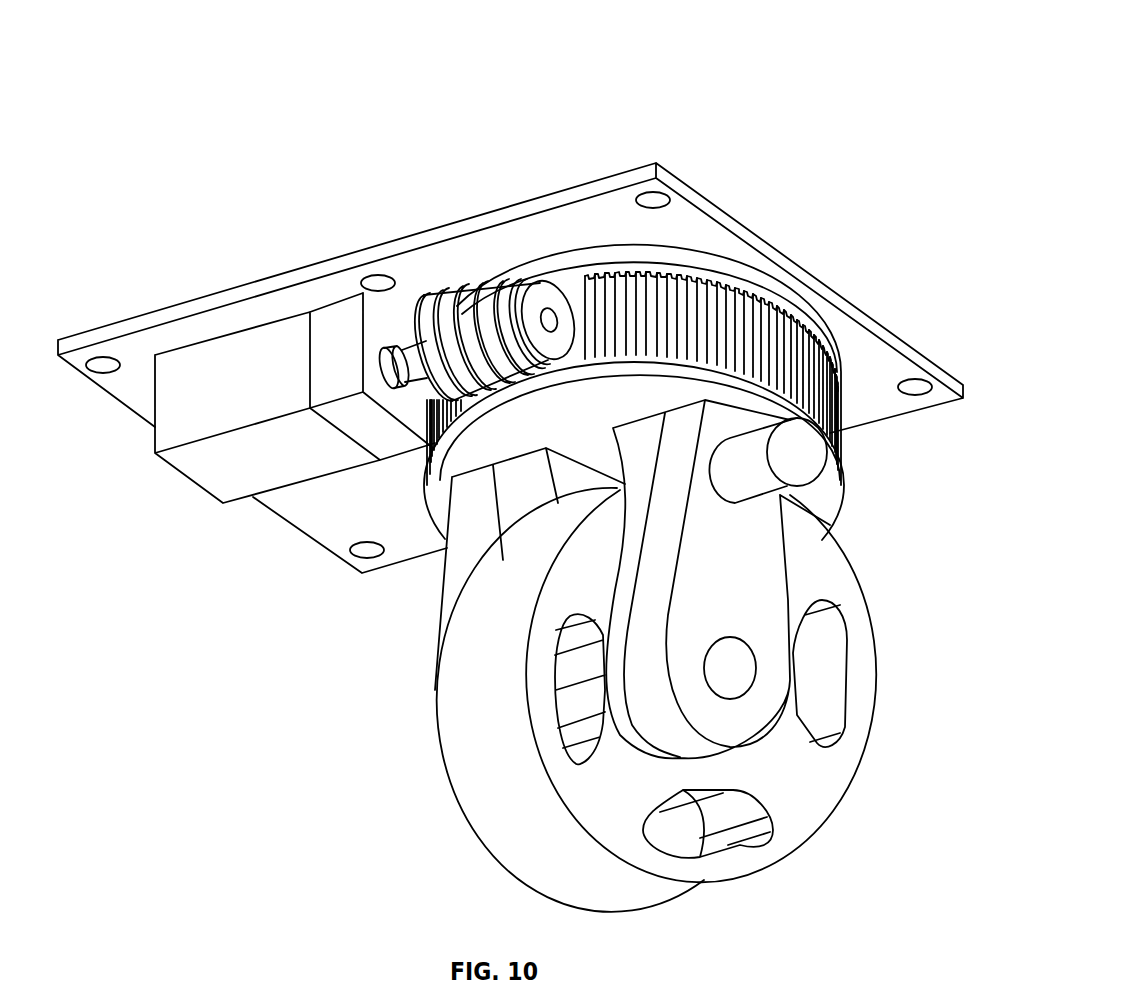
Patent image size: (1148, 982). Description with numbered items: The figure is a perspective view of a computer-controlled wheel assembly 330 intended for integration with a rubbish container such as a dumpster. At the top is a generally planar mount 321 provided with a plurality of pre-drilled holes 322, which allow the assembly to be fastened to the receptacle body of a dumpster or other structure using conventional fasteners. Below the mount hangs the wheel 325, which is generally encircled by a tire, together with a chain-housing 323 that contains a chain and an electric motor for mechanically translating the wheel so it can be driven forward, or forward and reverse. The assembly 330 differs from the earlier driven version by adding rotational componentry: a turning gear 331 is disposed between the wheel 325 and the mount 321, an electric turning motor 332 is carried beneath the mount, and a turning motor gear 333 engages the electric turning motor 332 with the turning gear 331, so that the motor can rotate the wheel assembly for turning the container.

The computer-controlled wheel assembly 330 is at (729, 37).
The mount 321 is at (233, 297).
The pre-drilled holes 322 is at (373, 285).
The chain-housing 323 is at (800, 452).
The wheel 325 is at (815, 795).
The turning gear 331 is at (788, 347).
The electric turning motor 332 is at (280, 393).
The turning motor gear 333 is at (462, 300).